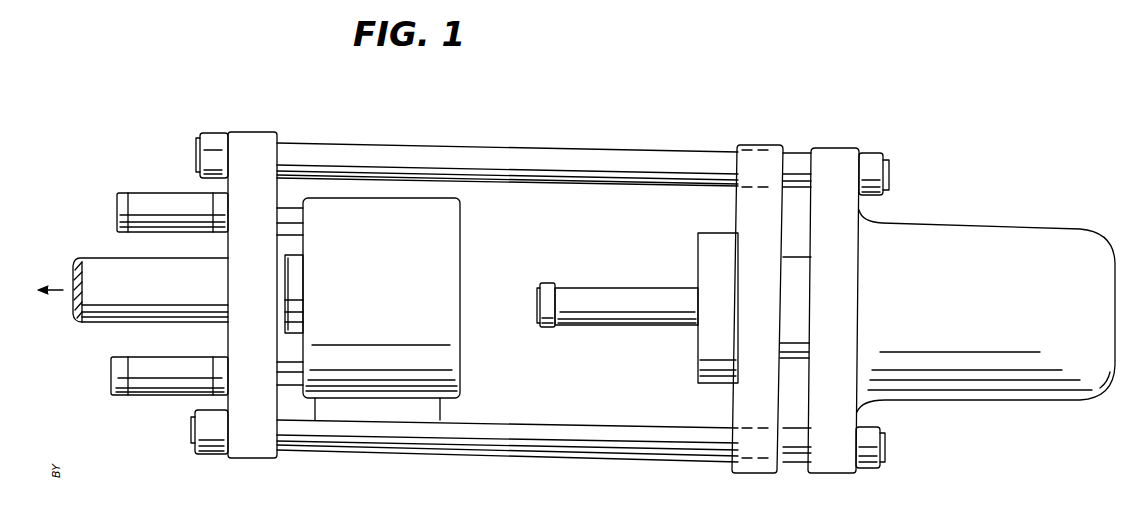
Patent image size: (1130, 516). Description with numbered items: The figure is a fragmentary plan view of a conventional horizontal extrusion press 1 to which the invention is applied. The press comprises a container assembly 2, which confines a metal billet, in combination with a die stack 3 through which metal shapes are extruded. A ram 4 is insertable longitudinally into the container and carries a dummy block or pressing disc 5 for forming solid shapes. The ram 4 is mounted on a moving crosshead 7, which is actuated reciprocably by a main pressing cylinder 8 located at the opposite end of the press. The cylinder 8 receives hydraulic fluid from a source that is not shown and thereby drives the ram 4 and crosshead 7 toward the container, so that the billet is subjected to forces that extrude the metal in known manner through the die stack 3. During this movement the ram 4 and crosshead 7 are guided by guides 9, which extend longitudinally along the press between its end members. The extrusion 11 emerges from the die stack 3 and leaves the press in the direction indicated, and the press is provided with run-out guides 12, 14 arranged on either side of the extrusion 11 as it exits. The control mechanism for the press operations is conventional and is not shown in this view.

The horizontal press 1 is at (684, 104).
The container assembly 2 is at (452, 264).
The die stack 3 is at (297, 304).
The ram 4 is at (612, 288).
The dummy block 5 is at (548, 286).
The moving crosshead 7 is at (764, 144).
The main pressing cylinder 8 is at (998, 228).
The guides 9 is at (584, 158).
The extrusion 11 is at (102, 258).
The run-out guide 12 is at (155, 196).
The run-out guide 14 is at (150, 396).